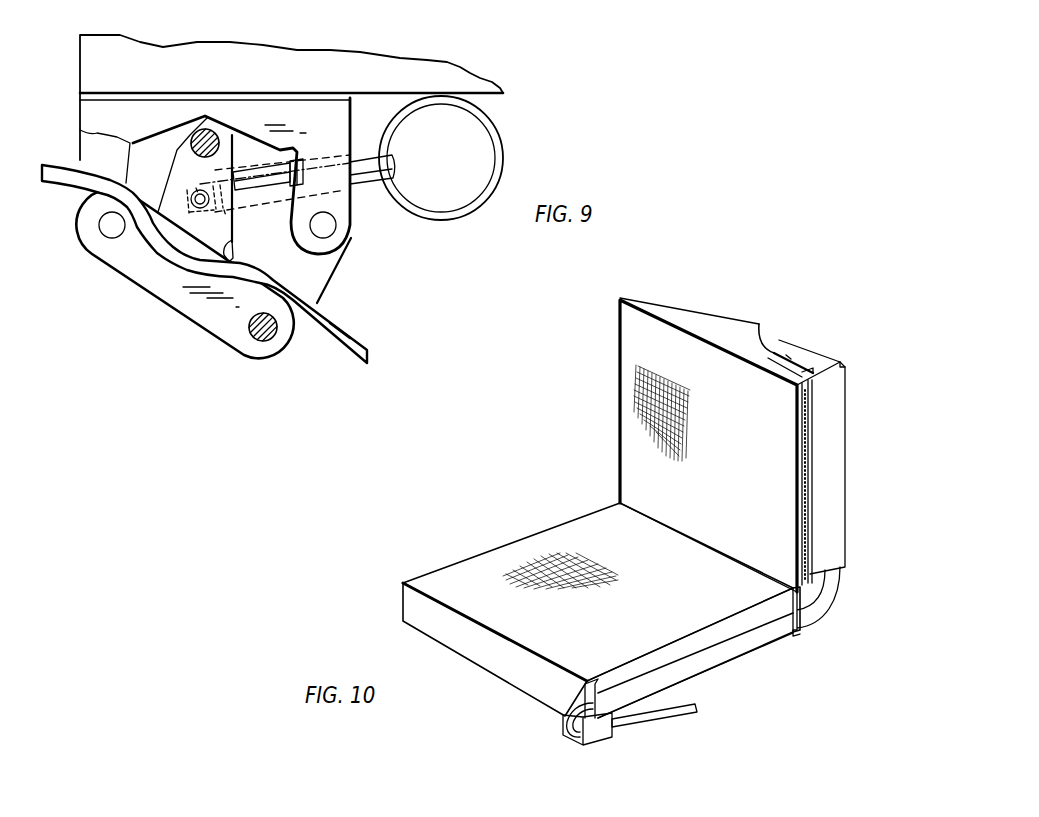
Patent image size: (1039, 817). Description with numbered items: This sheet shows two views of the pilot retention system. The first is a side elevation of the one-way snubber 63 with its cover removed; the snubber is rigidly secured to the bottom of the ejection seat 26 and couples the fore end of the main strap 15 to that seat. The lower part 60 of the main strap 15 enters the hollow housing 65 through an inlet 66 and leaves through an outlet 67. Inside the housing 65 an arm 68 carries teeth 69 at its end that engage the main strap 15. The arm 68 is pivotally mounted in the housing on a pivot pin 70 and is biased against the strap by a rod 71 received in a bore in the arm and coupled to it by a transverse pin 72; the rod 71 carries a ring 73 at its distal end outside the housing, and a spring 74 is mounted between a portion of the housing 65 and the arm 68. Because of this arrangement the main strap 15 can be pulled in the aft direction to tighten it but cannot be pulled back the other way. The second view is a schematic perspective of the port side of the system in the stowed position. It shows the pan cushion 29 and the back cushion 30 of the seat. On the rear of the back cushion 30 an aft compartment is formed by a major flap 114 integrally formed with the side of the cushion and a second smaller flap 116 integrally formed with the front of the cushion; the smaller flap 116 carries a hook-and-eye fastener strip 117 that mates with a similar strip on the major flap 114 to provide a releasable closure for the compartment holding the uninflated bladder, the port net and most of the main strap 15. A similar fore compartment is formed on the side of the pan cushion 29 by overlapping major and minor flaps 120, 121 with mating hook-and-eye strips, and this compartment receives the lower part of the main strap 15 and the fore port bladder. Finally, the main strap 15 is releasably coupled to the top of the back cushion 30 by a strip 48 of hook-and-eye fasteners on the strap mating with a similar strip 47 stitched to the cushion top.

In FIG. 9, the main strap 15 is at (346, 322).
In FIG. 10, the main strap 15 is at (782, 347).
In FIG. 9, the ejection seat 26 is at (398, 56).
In FIG. 10, the pan cushion 29 is at (560, 540).
In FIG. 10, the back cushion 30 is at (633, 357).
In FIG. 10, the hook-and-eye fastener strip 47 is at (775, 360).
In FIG. 10, the hook-and-eye fastener strip 48 is at (788, 357).
In FIG. 9, the lower part of main strap 60 is at (374, 346).
In FIG. 10, the lower part of main strap 60 is at (672, 716).
In FIG. 10, the one-way snubber 63 is at (596, 746).
In FIG. 9, the housing 65 is at (203, 330).
In FIG. 9, the inlet 66 is at (86, 143).
In FIG. 9, the outlet 67 is at (312, 276).
In FIG. 9, the arm 68 is at (212, 172).
In FIG. 9, the teeth 69 is at (236, 243).
In FIG. 9, the pivot pin 70 is at (217, 133).
In FIG. 9, the rod 71 is at (358, 182).
In FIG. 9, the transverse pin 72 is at (197, 191).
In FIG. 9, the tube 73 is at (503, 150).
In FIG. 9, the spring 74 is at (284, 178).
In FIG. 10, the major flap 114 is at (834, 437).
In FIG. 10, the second smaller flap 116 is at (801, 500).
In FIG. 10, the hook-and-eye fastener strip 117 is at (801, 434).
In FIG. 10, the major flap 120 is at (735, 650).
In FIG. 10, the minor flap 121 is at (705, 624).